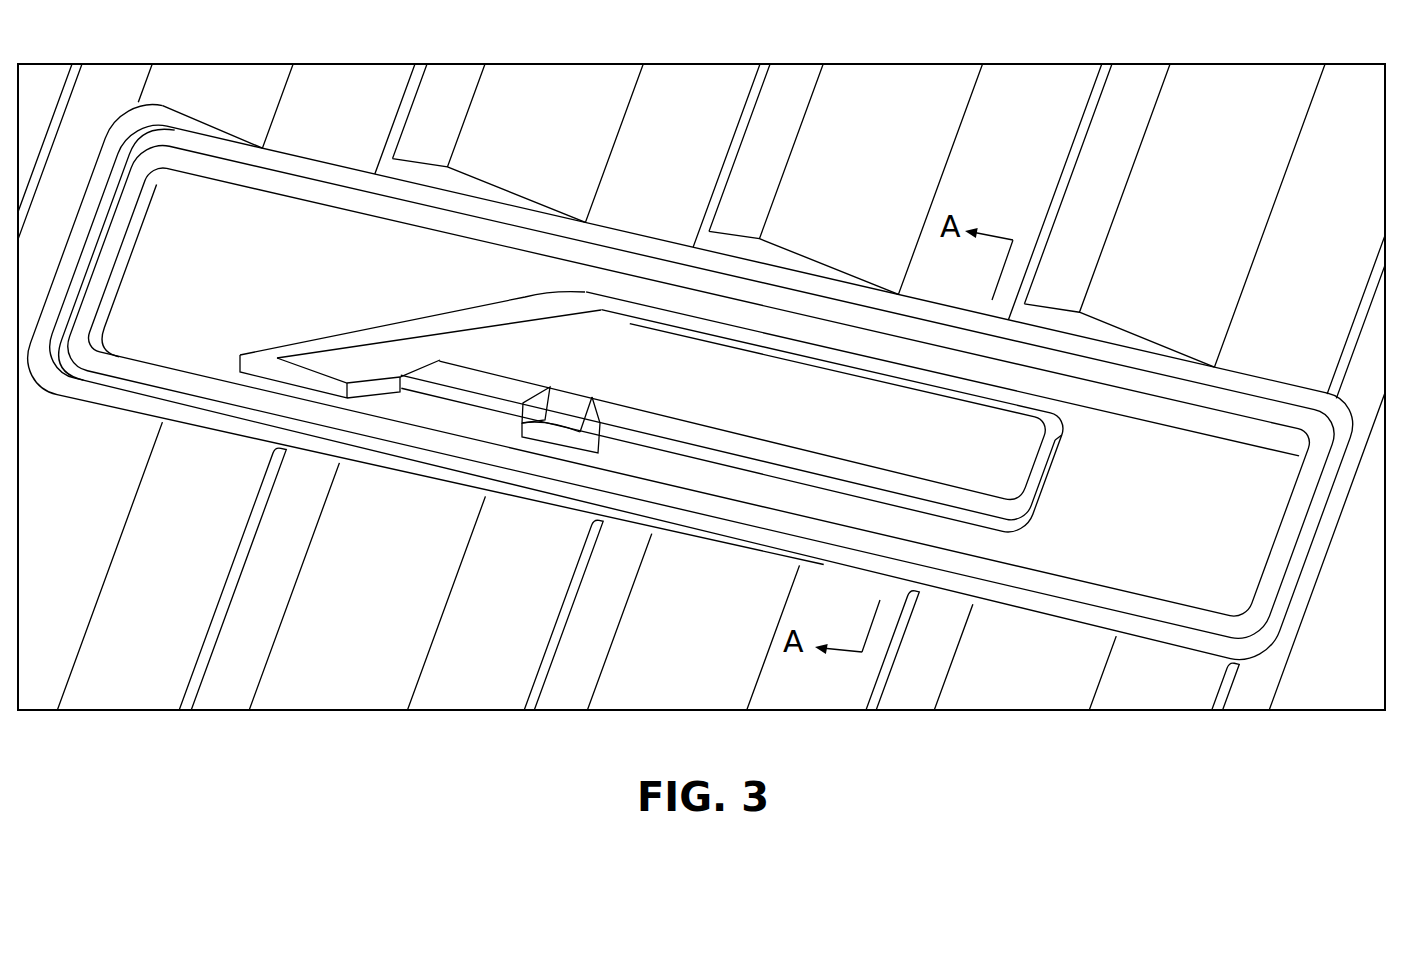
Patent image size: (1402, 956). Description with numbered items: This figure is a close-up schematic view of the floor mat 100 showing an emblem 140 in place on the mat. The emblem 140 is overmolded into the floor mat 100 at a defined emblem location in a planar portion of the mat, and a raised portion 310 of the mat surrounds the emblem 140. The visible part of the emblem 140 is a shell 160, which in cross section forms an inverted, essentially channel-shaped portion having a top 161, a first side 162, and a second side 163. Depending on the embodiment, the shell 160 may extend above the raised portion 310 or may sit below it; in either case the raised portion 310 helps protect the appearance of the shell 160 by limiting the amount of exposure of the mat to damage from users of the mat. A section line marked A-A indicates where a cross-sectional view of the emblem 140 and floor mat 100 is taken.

The floor mat 100 is at (341, 682).
The emblem 140 is at (490, 342).
The shell 160 is at (672, 322).
The top 161 is at (600, 353).
The first side 162 is at (760, 465).
The second side 163 is at (840, 355).
The raised portion 310 is at (1258, 392).